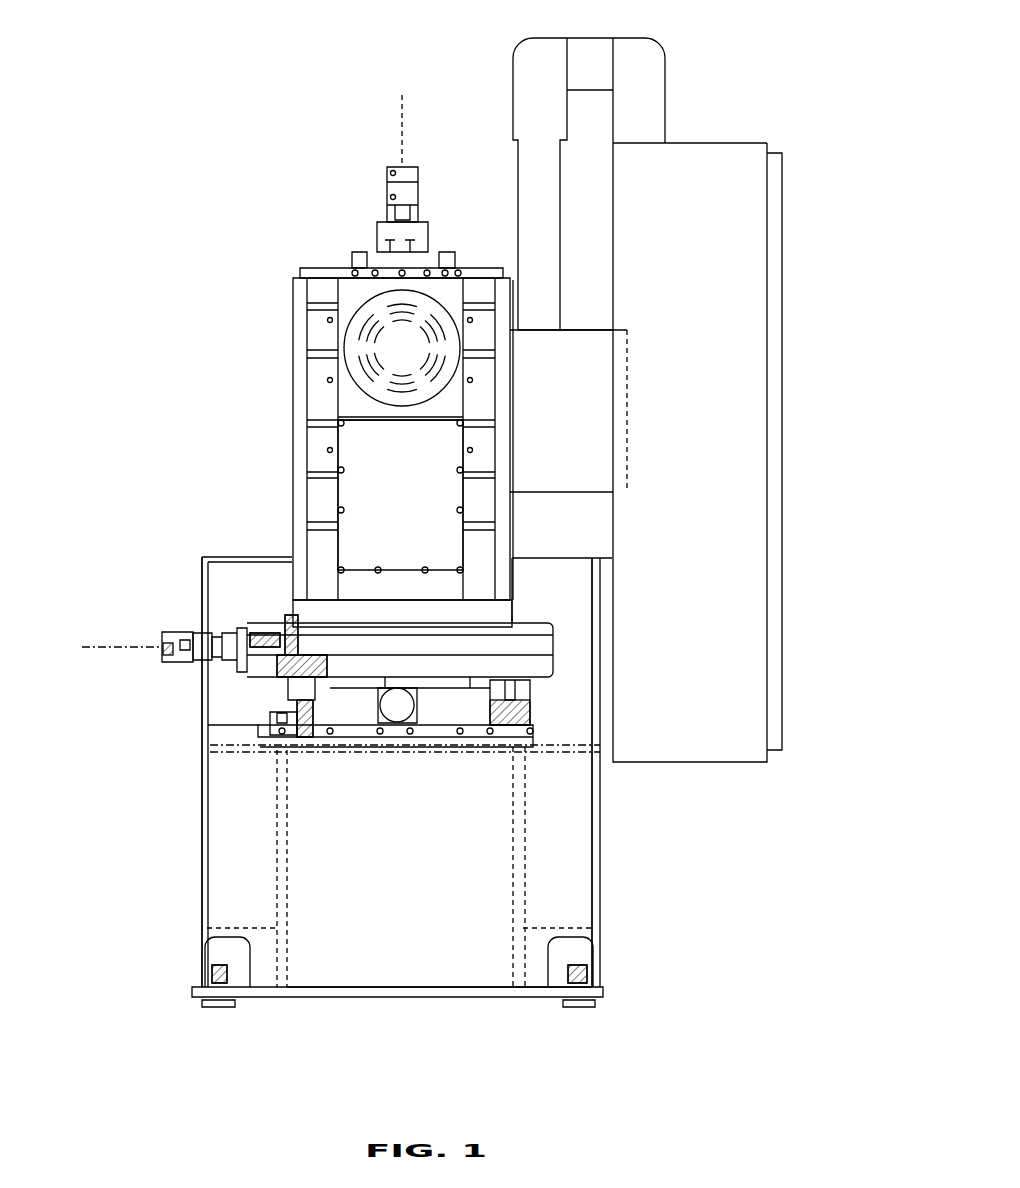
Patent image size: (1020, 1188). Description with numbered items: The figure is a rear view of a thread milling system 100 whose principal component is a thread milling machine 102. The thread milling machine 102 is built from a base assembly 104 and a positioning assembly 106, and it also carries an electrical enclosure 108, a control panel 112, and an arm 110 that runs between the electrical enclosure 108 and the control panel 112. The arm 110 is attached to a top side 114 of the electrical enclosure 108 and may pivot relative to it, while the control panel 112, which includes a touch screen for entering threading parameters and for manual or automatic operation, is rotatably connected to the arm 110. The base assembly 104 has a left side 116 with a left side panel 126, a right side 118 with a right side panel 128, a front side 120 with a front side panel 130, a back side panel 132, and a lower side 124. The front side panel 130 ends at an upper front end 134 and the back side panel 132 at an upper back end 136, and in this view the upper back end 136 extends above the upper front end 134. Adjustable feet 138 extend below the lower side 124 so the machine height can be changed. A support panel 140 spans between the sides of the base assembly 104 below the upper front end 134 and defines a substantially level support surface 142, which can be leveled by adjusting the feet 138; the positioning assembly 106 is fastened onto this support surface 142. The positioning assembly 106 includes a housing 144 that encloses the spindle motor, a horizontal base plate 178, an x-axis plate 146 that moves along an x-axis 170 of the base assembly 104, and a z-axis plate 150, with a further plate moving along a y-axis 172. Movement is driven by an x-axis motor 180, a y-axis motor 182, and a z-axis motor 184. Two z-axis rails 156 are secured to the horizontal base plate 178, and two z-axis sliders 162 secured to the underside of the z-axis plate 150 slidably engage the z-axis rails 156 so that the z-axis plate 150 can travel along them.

The thread milling system 100 is at (182, 120).
The thread milling machine 102 is at (205, 400).
The base assembly 104 is at (603, 800).
The positioning assembly 106 is at (500, 268).
The electrical enclosure 108 is at (768, 430).
The arm 110 is at (640, 38).
The control panel 112 is at (627, 420).
The top side 114 is at (715, 143).
The left side 116 is at (200, 905).
The right side 118 is at (603, 860).
The front side 120 is at (475, 988).
The lower side 124 is at (525, 997).
The left side panel 126 is at (205, 563).
The right side panel 128 is at (600, 605).
The front side panel 130 is at (345, 988).
The back side panel 132 is at (292, 560).
The upper front end 134 is at (560, 690).
The upper back end 136 is at (545, 558).
The feet 138 is at (218, 1005).
The support panel 140 is at (572, 745).
The support surface 142 is at (580, 745).
The housing 144 is at (295, 300).
The x-axis plate 146 is at (290, 615).
The z-axis plate 150 is at (275, 700).
The z-axis rails 156 is at (510, 712).
The z-axis sliders 162 is at (470, 692).
The x-axis 170 is at (160, 647).
The y-axis 172 is at (398, 125).
The horizontal base plate 178 is at (288, 740).
The x-axis motor 180 is at (185, 632).
The y-axis motor 182 is at (420, 178).
The z-axis motor 184 is at (392, 722).